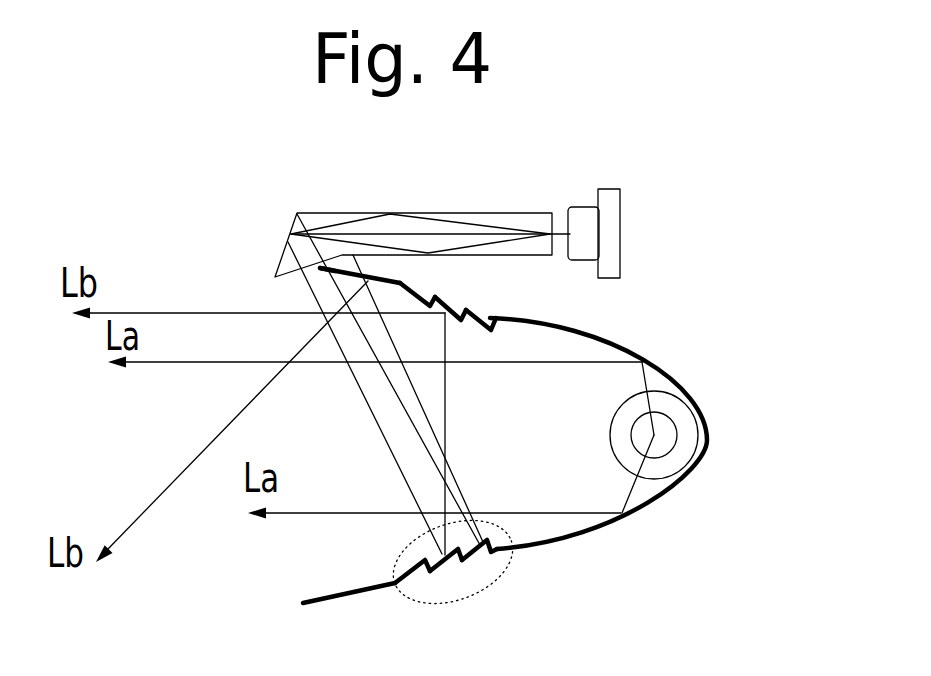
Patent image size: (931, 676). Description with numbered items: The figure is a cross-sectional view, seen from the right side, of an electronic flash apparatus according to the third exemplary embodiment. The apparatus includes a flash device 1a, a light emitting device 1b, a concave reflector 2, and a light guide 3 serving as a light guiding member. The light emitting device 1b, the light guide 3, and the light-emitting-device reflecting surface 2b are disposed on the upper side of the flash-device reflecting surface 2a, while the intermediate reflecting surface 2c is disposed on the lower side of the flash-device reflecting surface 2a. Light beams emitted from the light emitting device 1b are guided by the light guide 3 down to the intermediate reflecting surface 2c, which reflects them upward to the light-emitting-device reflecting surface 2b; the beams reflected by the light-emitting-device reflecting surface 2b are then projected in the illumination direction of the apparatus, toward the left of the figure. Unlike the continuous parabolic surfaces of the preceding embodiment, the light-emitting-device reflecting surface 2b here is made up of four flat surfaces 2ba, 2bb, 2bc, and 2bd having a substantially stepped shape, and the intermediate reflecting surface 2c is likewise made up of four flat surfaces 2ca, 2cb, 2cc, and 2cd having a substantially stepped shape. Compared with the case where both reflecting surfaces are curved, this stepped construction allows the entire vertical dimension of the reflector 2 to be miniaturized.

The flash device 1a is at (654, 435).
The light emitting device 1b is at (570, 234).
The concave reflector 2 is at (476, 434).
The flash-device reflecting surface 2a is at (570, 444).
The light-emitting-device reflecting surface 2b is at (370, 330).
The flat surface 2ba is at (468, 321).
The flat surface 2bb is at (453, 316).
The flat surface 2bc is at (397, 301).
The flat surface 2bd is at (347, 293).
The intermediate reflecting surface 2c is at (402, 506).
The flat surface 2ca is at (483, 538).
The flat surface 2cb is at (423, 560).
The flat surface 2cc is at (416, 570).
The flat surface 2cd is at (350, 592).
The light guide 3 is at (432, 198).